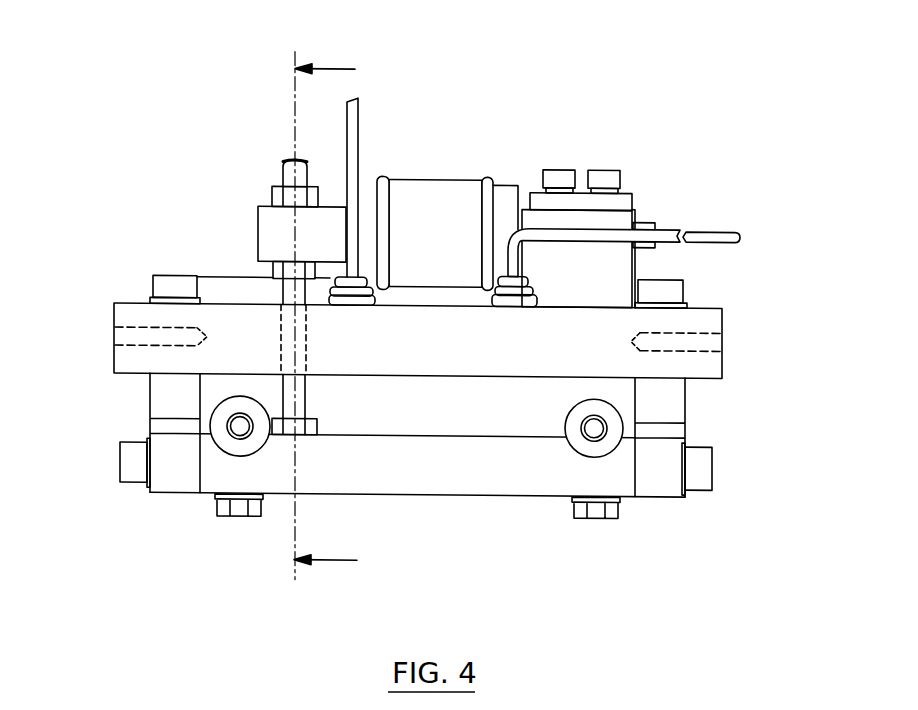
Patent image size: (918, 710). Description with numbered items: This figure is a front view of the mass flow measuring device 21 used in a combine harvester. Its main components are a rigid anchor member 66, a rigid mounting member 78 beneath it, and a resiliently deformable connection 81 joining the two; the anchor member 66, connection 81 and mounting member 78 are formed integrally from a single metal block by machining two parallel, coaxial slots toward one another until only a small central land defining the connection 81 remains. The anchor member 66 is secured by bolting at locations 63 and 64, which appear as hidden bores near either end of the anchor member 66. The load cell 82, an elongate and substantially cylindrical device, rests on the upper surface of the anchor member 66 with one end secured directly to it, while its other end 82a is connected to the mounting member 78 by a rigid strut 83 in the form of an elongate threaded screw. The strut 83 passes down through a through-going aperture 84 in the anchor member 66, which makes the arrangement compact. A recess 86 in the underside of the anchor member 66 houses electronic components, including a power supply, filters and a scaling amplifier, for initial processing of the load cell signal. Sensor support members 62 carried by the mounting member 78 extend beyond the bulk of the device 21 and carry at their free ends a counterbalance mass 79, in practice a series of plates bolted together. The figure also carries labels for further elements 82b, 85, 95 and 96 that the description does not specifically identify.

The mass flow measuring device 21 is at (497, 99).
The sensor support member 62 is at (228, 442).
The bolting location 63 is at (143, 343).
The bolting location 64 is at (710, 338).
The anchor member 66 is at (700, 317).
The mounting member 78 is at (465, 467).
The counterbalance mass 79 is at (212, 286).
The resiliently deformable connection 81 is at (150, 422).
The load cell 82 is at (417, 197).
The end of load cell 82a is at (265, 212).
The valve body 82b is at (623, 215).
The strut 83 is at (283, 292).
The through going aperture 84 is at (308, 340).
The block 85 is at (615, 274).
The recess 86 is at (331, 260).
The pipe 95 is at (712, 225).
The post 96 is at (358, 150).